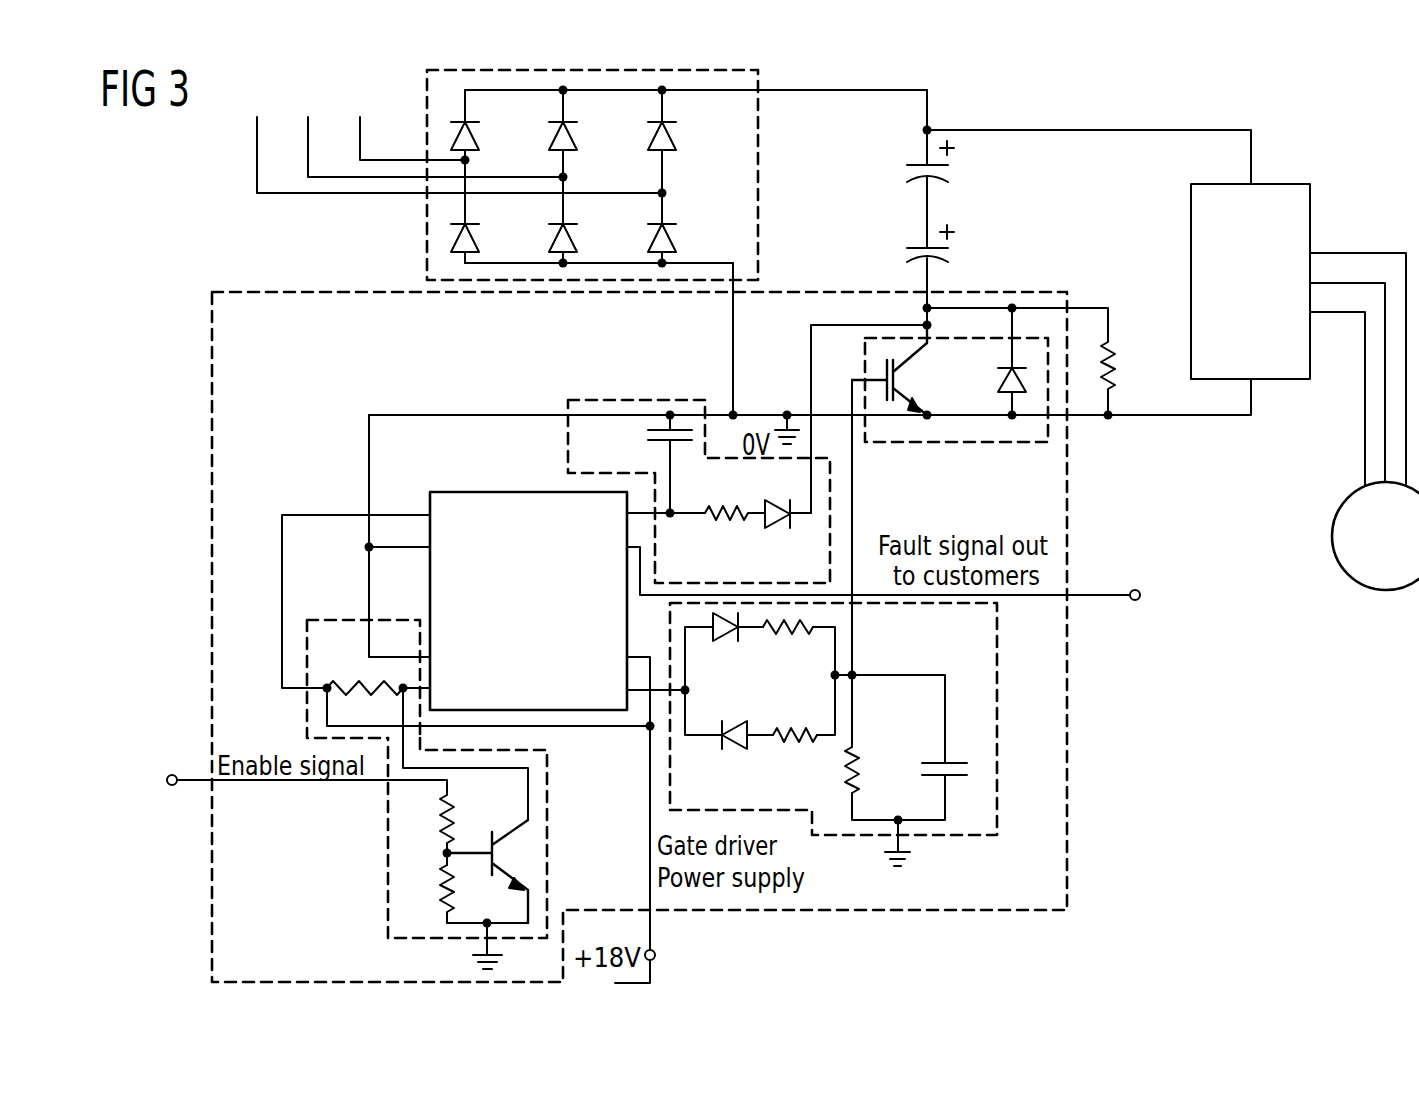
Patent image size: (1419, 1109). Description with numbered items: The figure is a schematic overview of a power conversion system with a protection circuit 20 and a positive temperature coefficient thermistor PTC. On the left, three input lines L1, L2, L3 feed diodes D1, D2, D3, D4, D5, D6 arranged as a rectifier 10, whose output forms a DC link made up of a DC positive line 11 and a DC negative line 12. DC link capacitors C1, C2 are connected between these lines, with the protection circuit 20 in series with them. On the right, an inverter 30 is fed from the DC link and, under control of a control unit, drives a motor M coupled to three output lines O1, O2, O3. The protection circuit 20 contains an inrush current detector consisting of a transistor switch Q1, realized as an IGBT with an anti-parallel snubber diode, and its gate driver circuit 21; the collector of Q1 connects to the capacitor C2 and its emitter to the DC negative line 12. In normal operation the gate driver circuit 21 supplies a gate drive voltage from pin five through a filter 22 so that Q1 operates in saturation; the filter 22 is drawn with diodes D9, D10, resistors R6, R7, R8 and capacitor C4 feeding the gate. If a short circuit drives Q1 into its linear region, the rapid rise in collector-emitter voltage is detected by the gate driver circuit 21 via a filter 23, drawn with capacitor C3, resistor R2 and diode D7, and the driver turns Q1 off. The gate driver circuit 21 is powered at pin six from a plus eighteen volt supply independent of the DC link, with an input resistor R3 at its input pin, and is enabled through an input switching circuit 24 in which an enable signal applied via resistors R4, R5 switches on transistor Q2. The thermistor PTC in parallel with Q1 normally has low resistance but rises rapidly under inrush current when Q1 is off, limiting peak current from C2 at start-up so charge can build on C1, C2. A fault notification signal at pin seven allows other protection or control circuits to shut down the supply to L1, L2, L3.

The rectifier 10 is at (427, 237).
The DC positive line 11 is at (830, 92).
The DC negative line 12 is at (732, 320).
The protection circuit 20 is at (253, 292).
The gate driver circuit 21 is at (513, 492).
The filter 22 is at (975, 838).
The filter 23 is at (621, 399).
The input switching circuit 24 is at (549, 842).
The inverter 30 is at (1280, 183).
The input line L1 is at (454, 137).
The input line L2 is at (430, 129).
The input line L3 is at (406, 121).
The diode D1 is at (474, 137).
The diode D2 is at (572, 137).
The diode D3 is at (671, 137).
The diode D4 is at (474, 239).
The diode D5 is at (572, 239).
The diode D6 is at (671, 239).
The desaturation diode D7 is at (784, 525).
The gate charge diode D9 is at (725, 640).
The gate discharge diode D10 is at (725, 745).
The DC link capacitor C1 is at (905, 172).
The DC link capacitor C2 is at (905, 260).
The desaturation capacitor C3 is at (645, 437).
The gate capacitor C4 is at (950, 760).
The desaturation resistor R2 is at (727, 519).
The input resistor R3 is at (348, 687).
The enable resistor R4 is at (440, 826).
The enable resistor R5 is at (440, 900).
The gate charge resistor R6 is at (790, 632).
The gate discharge resistor R7 is at (785, 745).
The gate resistor R8 is at (857, 763).
The transistor switch Q1 is at (950, 410).
The element IGBT is at (910, 370).
The transistor switch Q2 is at (500, 831).
The positive temperature coefficient thermistor PTC is at (1048, 361).
The output line O1 is at (1373, 250).
The output line O2 is at (1385, 426).
The output line O3 is at (1365, 471).
The motor M is at (1375, 536).